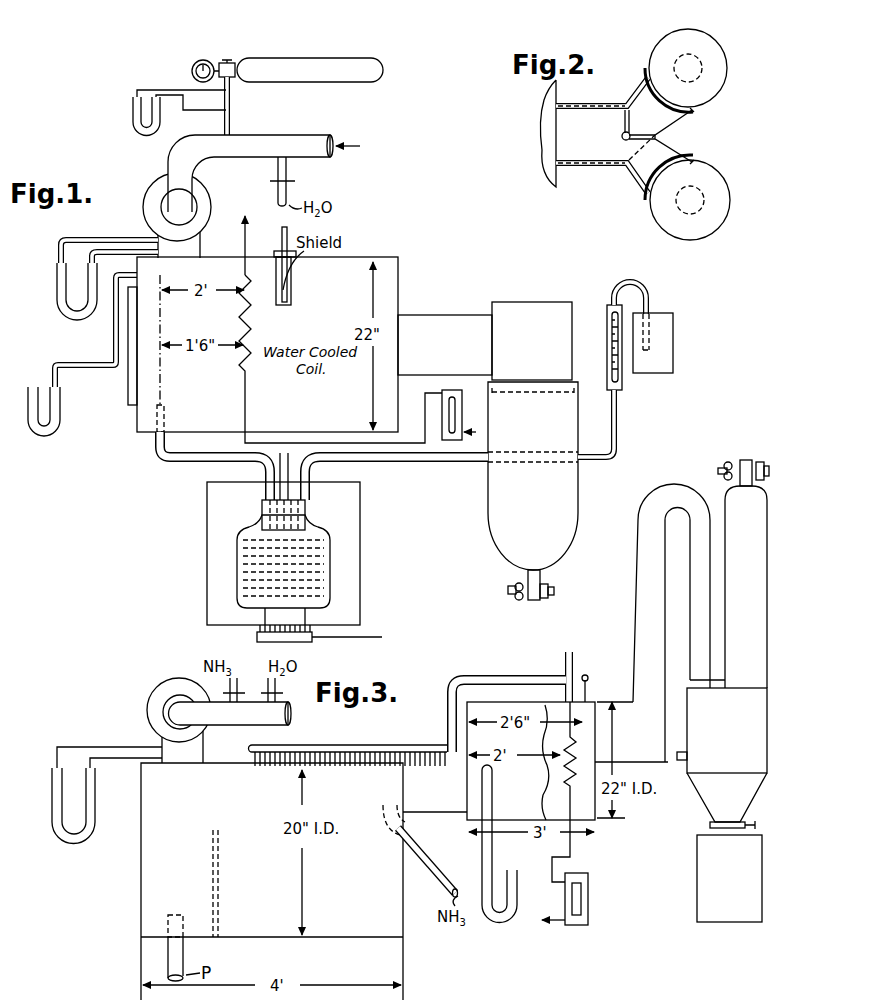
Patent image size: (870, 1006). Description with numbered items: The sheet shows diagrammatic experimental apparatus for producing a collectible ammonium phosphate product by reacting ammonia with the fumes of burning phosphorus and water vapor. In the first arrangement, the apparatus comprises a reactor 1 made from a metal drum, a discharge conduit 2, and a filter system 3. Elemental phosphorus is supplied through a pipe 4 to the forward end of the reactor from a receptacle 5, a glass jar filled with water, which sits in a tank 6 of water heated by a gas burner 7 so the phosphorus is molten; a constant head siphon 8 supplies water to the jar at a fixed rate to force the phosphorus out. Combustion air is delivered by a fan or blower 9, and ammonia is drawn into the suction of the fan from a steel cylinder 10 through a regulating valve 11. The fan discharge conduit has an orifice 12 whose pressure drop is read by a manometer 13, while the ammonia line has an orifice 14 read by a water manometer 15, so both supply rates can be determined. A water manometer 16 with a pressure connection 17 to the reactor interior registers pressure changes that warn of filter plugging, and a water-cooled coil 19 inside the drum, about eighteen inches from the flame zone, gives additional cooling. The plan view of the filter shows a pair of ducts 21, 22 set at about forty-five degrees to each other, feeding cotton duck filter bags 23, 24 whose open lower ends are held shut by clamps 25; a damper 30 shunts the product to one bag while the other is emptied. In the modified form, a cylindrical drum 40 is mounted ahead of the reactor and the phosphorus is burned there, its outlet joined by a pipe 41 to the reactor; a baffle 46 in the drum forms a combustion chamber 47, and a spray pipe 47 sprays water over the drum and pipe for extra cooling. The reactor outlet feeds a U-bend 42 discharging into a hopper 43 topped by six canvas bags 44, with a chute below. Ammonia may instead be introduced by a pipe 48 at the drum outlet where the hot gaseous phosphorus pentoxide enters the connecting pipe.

In FIG. 1, the reactor 1 is at (354, 258).
In FIG. 1, the discharge conduit 2 is at (416, 314).
In FIG. 1, the filter system 3 is at (547, 299).
In FIG. 1, the pipe 4 is at (174, 462).
In FIG. 3, the pipe 4 is at (184, 952).
In FIG. 1, the receptacle 5 is at (333, 566).
In FIG. 1, the tank 6 is at (357, 541).
In FIG. 1, the gas burner 7 is at (257, 637).
In FIG. 1, the constant head siphon 8 is at (673, 353).
In FIG. 1, the fan or blower 9 is at (143, 205).
In FIG. 3, the fan or blower 9 is at (150, 704).
In FIG. 1, the steel cylinder 10 is at (270, 83).
In FIG. 1, the regulating valve 11 is at (230, 62).
In FIG. 1, the orifice 12 is at (48, 296).
In FIG. 3, the orifice 12 is at (697, 645).
In FIG. 1, the manometer 13 is at (234, 102).
In FIG. 1, the orifice 14 is at (131, 107).
In FIG. 1, the water manometer 15 is at (83, 426).
In FIG. 1, the water manometer 16 is at (113, 329).
In FIG. 1, the pressure connection 17 is at (281, 243).
In FIG. 1, the water-cooled coil 19 is at (250, 337).
In FIG. 3, the water-cooled coil 19 is at (572, 780).
In FIG. 2, the duct 21 is at (640, 180).
In FIG. 2, the duct 22 is at (634, 92).
In FIG. 1, the filter bag 23 is at (578, 504).
In FIG. 2, the filter bag 23 is at (729, 197).
In FIG. 2, the filter bag 24 is at (725, 84).
In FIG. 1, the clamp 25 is at (541, 598).
In FIG. 3, the clamp 25 is at (716, 470).
In FIG. 2, the damper 30 is at (622, 133).
In FIG. 3, the cylindrical drum 40 is at (141, 908).
In FIG. 3, the pipe 41 is at (442, 812).
In FIG. 3, the U-bend 42 is at (656, 623).
In FIG. 3, the hopper 43 is at (687, 762).
In FIG. 3, the bags 44 is at (752, 596).
In FIG. 3, the baffle 46 is at (219, 890).
In FIG. 3, the combustion chamber 47 is at (410, 745).
In FIG. 3, the pipe 48 is at (433, 880).